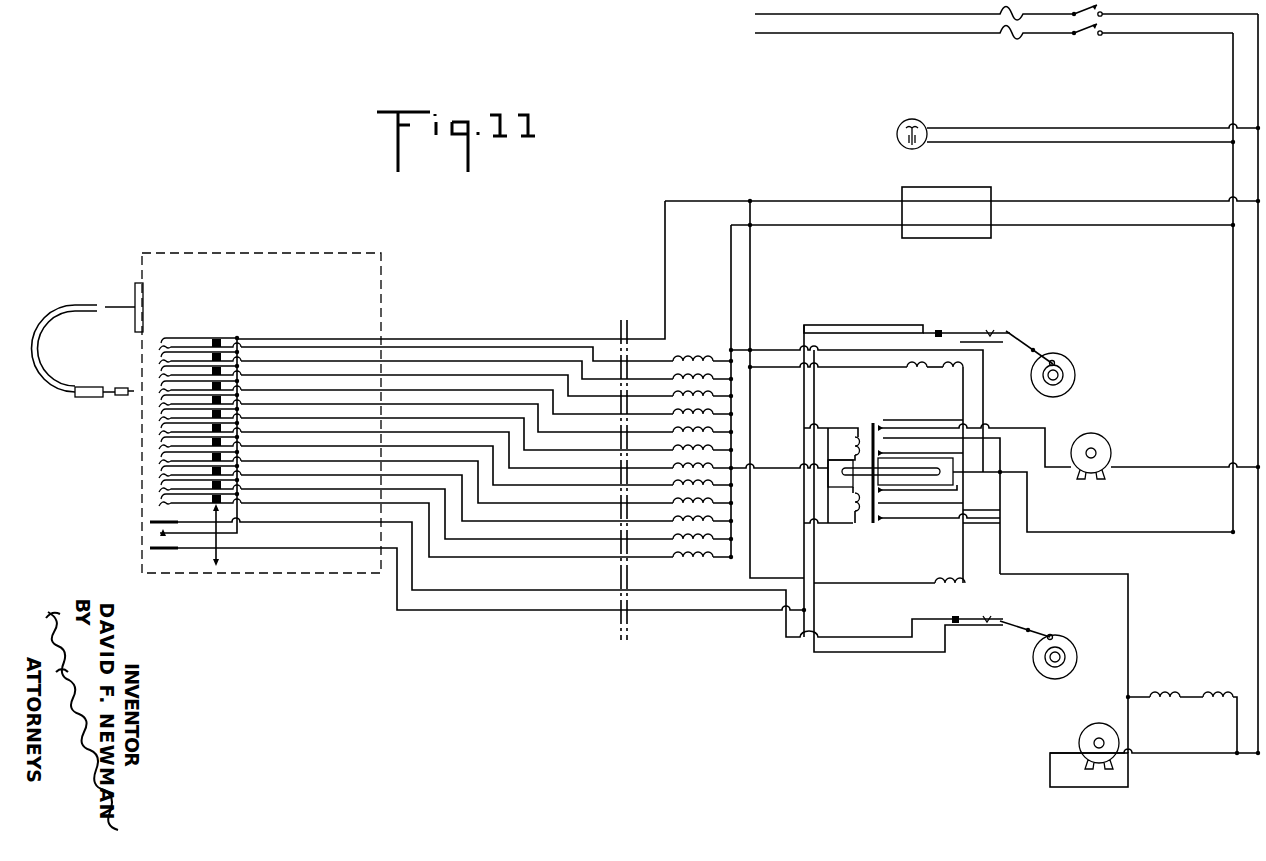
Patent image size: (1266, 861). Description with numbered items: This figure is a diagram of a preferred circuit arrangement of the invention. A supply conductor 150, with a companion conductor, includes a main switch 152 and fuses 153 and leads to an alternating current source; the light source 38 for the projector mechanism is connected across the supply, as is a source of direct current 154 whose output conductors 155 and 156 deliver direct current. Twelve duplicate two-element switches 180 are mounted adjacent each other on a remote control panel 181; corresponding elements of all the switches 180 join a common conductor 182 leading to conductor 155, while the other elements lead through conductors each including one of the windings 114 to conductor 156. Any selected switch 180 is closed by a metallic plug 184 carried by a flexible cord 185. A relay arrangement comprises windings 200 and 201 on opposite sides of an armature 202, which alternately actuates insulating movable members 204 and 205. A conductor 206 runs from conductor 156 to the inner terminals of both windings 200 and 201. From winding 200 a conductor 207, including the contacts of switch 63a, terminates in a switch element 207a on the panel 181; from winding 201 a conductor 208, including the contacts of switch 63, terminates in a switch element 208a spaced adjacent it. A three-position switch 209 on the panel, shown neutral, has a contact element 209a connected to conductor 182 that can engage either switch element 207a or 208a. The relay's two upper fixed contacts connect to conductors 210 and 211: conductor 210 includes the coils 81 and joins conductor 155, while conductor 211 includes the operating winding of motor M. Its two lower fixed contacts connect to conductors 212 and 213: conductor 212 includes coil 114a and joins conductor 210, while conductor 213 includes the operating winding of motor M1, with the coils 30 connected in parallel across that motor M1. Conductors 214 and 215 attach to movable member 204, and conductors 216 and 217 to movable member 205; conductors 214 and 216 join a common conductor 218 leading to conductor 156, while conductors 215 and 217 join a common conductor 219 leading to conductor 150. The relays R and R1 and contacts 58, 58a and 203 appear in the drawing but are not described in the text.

The coils 30 is at (1165, 703).
The light source 38 is at (928, 125).
The relay armature contact 58 is at (1037, 345).
The relay armature contact 58a is at (1013, 620).
The switch 63 is at (984, 325).
The switch 63a is at (968, 627).
The coils 81 is at (945, 368).
The winding 114 is at (686, 376).
The coil 114a is at (945, 584).
The conductor 150 is at (1228, 363).
The main switch 152 is at (1085, 40).
The fuses 153 is at (1013, 37).
The source of direct current 154 is at (950, 187).
The output conductor 155 is at (812, 200).
The output conductor 156 is at (823, 225).
The two-element switch 180 is at (204, 369).
The panel 181 is at (290, 252).
The common conductor 182 is at (240, 506).
The plug 184 is at (92, 400).
The flexible cord 185 is at (60, 338).
The winding 200 is at (832, 473).
The winding 201 is at (854, 527).
The armature 202 is at (843, 499).
The relay frame 203 is at (845, 560).
The movable member 204 is at (874, 422).
The movable member 205 is at (882, 526).
The conductor 206 is at (746, 442).
The conductor 207 is at (315, 521).
The switch element 207a is at (150, 521).
The conductor 208 is at (311, 548).
The switch element 208a is at (150, 549).
The three-position switch 209 is at (213, 542).
The contact element 209a is at (158, 533).
The conductor 210 is at (752, 275).
The conductor 211 is at (945, 420).
The conductor 212 is at (752, 391).
The conductor 213 is at (1132, 620).
The conductor 214 is at (920, 456).
The conductor 215 is at (939, 497).
The conductor 216 is at (920, 492).
The conductor 217 is at (939, 518).
The common conductor 218 is at (754, 342).
The common conductor 219 is at (1035, 507).
The relay R is at (1075, 368).
The relay R1 is at (1035, 670).
The motor M is at (1103, 444).
The motor M1 is at (1090, 723).